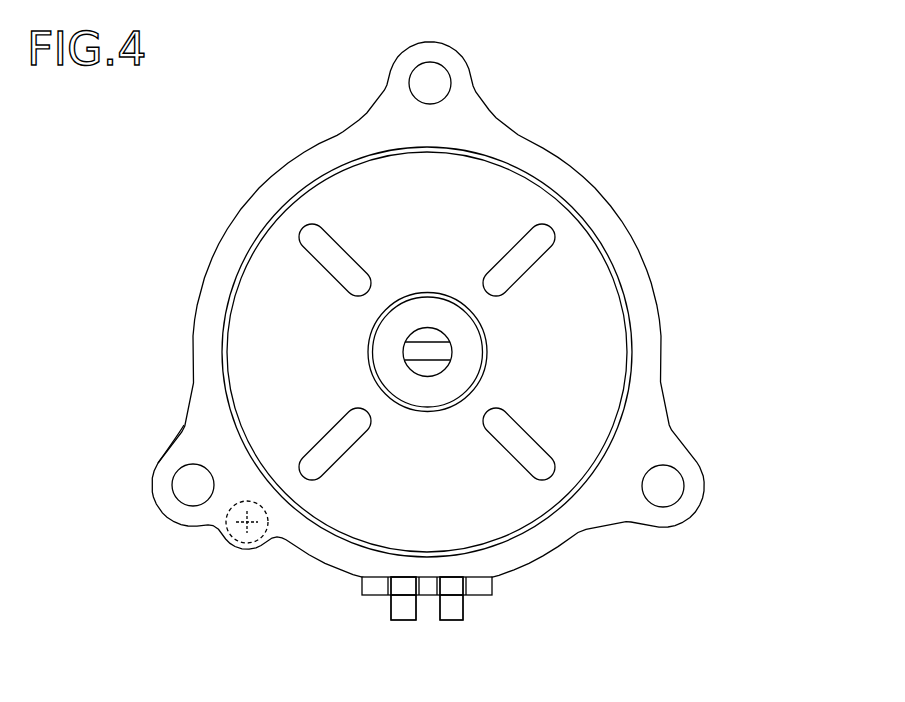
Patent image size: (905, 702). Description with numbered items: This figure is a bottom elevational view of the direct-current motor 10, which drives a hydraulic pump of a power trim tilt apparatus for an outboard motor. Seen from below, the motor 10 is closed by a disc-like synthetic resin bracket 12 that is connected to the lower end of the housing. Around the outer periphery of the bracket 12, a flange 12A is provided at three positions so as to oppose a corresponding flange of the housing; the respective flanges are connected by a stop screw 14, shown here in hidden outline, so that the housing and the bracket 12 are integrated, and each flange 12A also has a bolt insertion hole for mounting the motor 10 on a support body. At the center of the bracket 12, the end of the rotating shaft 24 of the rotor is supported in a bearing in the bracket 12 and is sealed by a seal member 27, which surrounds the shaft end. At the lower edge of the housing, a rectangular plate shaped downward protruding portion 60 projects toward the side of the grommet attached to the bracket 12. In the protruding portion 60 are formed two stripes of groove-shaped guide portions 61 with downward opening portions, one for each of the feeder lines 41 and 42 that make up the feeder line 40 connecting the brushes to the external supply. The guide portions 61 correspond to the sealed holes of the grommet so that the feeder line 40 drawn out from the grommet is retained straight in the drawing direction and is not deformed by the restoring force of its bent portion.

The direct-current motor 10 is at (242, 207).
The bracket 12 is at (203, 275).
The flange 12A is at (155, 463).
The stop screw 14 is at (237, 540).
The rotating shaft 24 is at (435, 366).
The seal member 27 is at (468, 332).
The feeder line 40 is at (406, 616).
The feeder line 41 is at (395, 612).
The feeder line 42 is at (455, 612).
The downward protruding portion 60 is at (362, 586).
The guide portion 61 is at (400, 590).